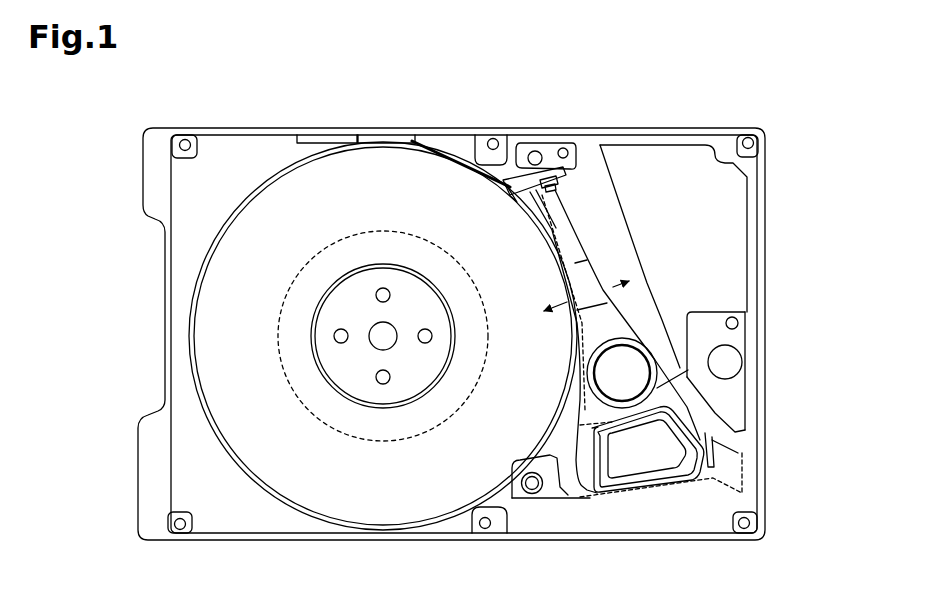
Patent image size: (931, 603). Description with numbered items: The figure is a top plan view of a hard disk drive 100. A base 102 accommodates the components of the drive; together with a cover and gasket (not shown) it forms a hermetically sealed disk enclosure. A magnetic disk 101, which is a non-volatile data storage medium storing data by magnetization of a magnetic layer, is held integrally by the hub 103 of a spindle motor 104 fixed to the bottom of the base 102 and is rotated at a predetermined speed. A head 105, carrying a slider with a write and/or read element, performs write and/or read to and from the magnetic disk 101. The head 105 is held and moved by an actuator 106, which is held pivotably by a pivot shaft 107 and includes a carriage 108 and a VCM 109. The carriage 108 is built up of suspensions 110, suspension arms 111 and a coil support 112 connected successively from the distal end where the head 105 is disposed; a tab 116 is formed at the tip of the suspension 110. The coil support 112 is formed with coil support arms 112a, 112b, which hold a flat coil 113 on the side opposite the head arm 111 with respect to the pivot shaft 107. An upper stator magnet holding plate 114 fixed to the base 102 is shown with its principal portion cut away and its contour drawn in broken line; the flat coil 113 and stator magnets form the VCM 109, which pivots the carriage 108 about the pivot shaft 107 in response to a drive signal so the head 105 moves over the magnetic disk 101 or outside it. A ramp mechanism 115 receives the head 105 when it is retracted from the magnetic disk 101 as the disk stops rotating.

The hard disk drive 100 is at (750, 88).
The magnetic disk 101 is at (357, 510).
The base 102 is at (195, 495).
The hub 103 is at (292, 325).
The spindle motor 104 is at (395, 392).
The head 105 is at (560, 192).
The actuator 106 is at (677, 350).
The pivot shaft 107 is at (607, 378).
The carriage 108 is at (644, 323).
The VCM (voice coil motor) 109 is at (627, 512).
The suspension 110 is at (565, 222).
The suspension arm 111 is at (578, 310).
The coil support 112 is at (553, 406).
The coil support arm 112a is at (582, 474).
The coil support arm 112b is at (738, 453).
The flat coil 113 is at (667, 477).
The upper stator magnet holding plate 114 is at (545, 472).
The ramp mechanism 115 is at (520, 136).
The tab 116 is at (532, 210).